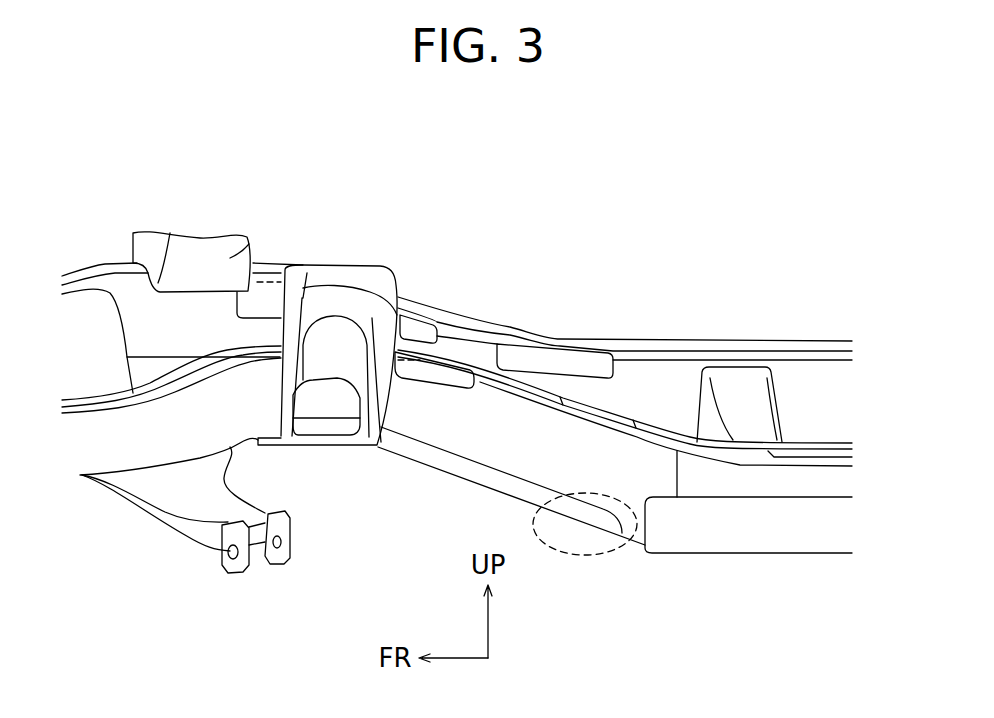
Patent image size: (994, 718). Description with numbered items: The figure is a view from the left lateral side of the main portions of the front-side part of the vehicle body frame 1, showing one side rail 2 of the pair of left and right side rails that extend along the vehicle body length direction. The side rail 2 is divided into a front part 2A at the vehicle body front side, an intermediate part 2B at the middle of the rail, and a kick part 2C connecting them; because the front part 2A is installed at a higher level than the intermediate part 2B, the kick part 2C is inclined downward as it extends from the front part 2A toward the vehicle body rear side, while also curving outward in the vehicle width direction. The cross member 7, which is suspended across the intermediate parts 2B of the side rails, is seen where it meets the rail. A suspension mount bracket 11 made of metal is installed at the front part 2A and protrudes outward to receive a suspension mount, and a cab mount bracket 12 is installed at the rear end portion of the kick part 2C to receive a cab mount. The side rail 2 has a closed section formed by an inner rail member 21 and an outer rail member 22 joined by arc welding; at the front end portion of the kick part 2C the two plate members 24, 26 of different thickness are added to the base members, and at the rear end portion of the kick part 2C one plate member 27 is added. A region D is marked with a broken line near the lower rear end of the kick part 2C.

The vehicle body frame 1 is at (138, 140).
The side rail 2 is at (609, 437).
The front part 2A is at (109, 256).
The intermediate part 2B is at (817, 332).
The kick part 2C is at (484, 319).
The cross member 7 is at (707, 412).
The suspension mount bracket 11 is at (262, 263).
The cab mount bracket 12 is at (707, 540).
The inner rail member 21 is at (685, 382).
The outer rail member 22 is at (757, 343).
The plate member 24 is at (408, 320).
The plate member 26 is at (466, 467).
The plate member 27 is at (571, 345).
The deformation region D is at (557, 553).